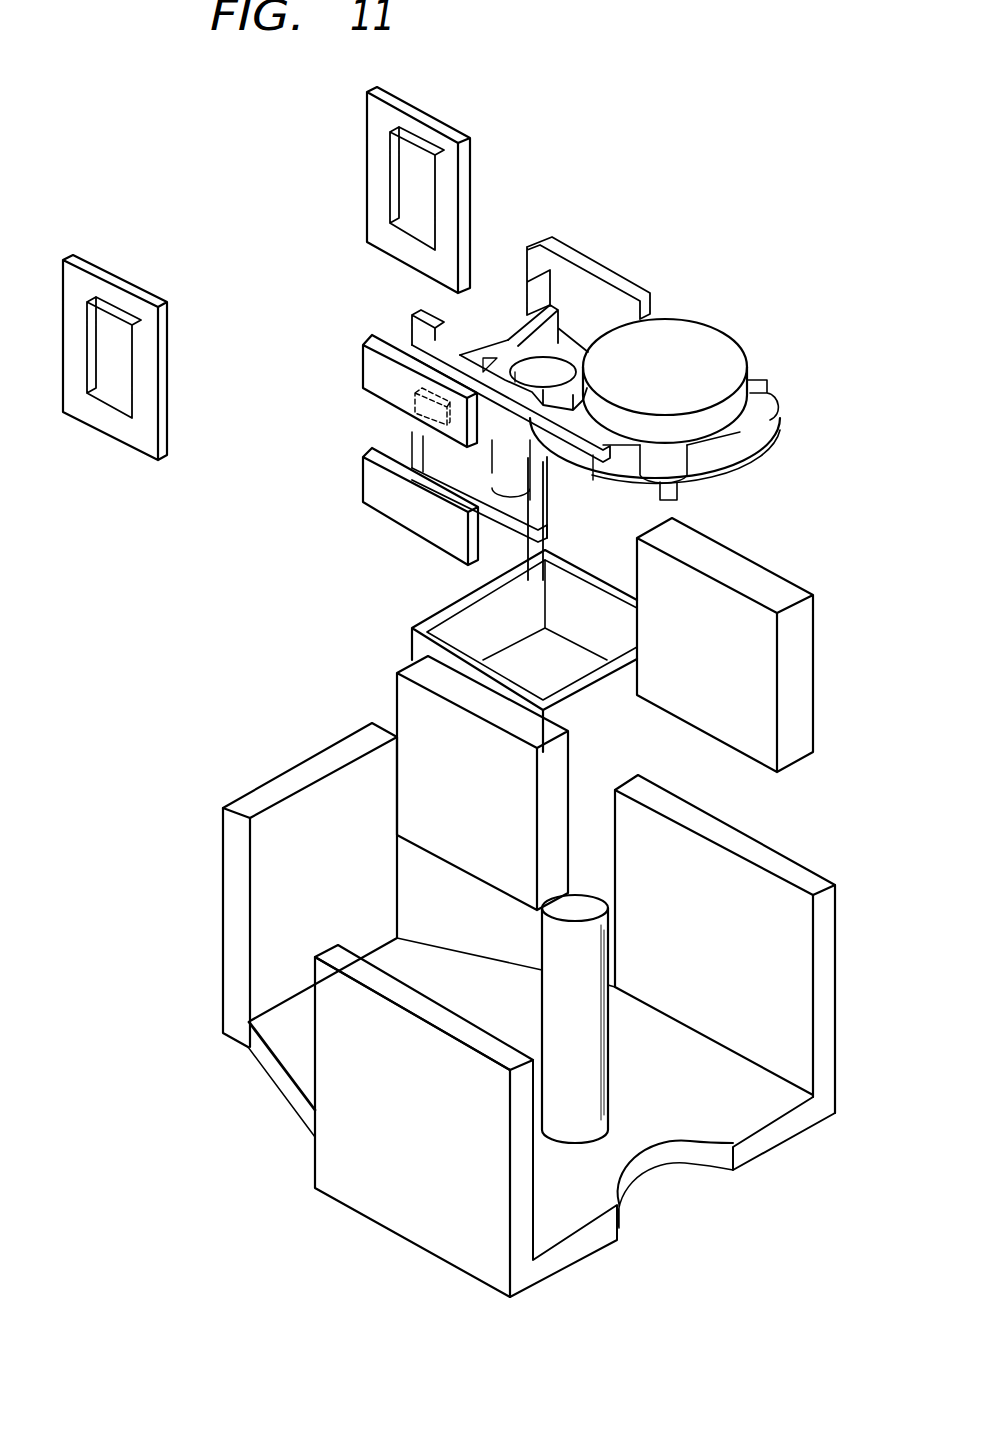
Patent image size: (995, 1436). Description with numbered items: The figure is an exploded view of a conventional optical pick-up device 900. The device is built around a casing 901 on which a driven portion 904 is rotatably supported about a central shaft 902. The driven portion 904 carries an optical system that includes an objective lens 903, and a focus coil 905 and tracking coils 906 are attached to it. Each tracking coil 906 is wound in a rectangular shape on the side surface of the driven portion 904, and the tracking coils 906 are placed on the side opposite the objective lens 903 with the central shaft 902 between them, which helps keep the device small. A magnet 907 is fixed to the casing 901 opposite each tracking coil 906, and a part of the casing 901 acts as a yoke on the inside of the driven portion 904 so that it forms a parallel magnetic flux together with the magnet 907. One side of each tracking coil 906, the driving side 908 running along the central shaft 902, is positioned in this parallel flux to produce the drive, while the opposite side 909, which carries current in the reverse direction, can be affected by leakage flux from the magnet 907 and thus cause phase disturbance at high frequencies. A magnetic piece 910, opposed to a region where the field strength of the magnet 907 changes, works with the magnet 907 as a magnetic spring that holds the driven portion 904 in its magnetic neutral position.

The optical pick-up device 900 is at (803, 378).
The casing 901 is at (567, 1223).
The central shaft 902 is at (590, 900).
The objective lens 903 is at (694, 335).
The driven portion 904 is at (497, 347).
The focus coil 905 is at (465, 625).
The tracking coil 906 is at (417, 128).
The magnet 907 is at (805, 630).
The driving side 908 is at (148, 377).
The opposite side 909 is at (284, 282).
The magnetic piece 910 is at (413, 412).